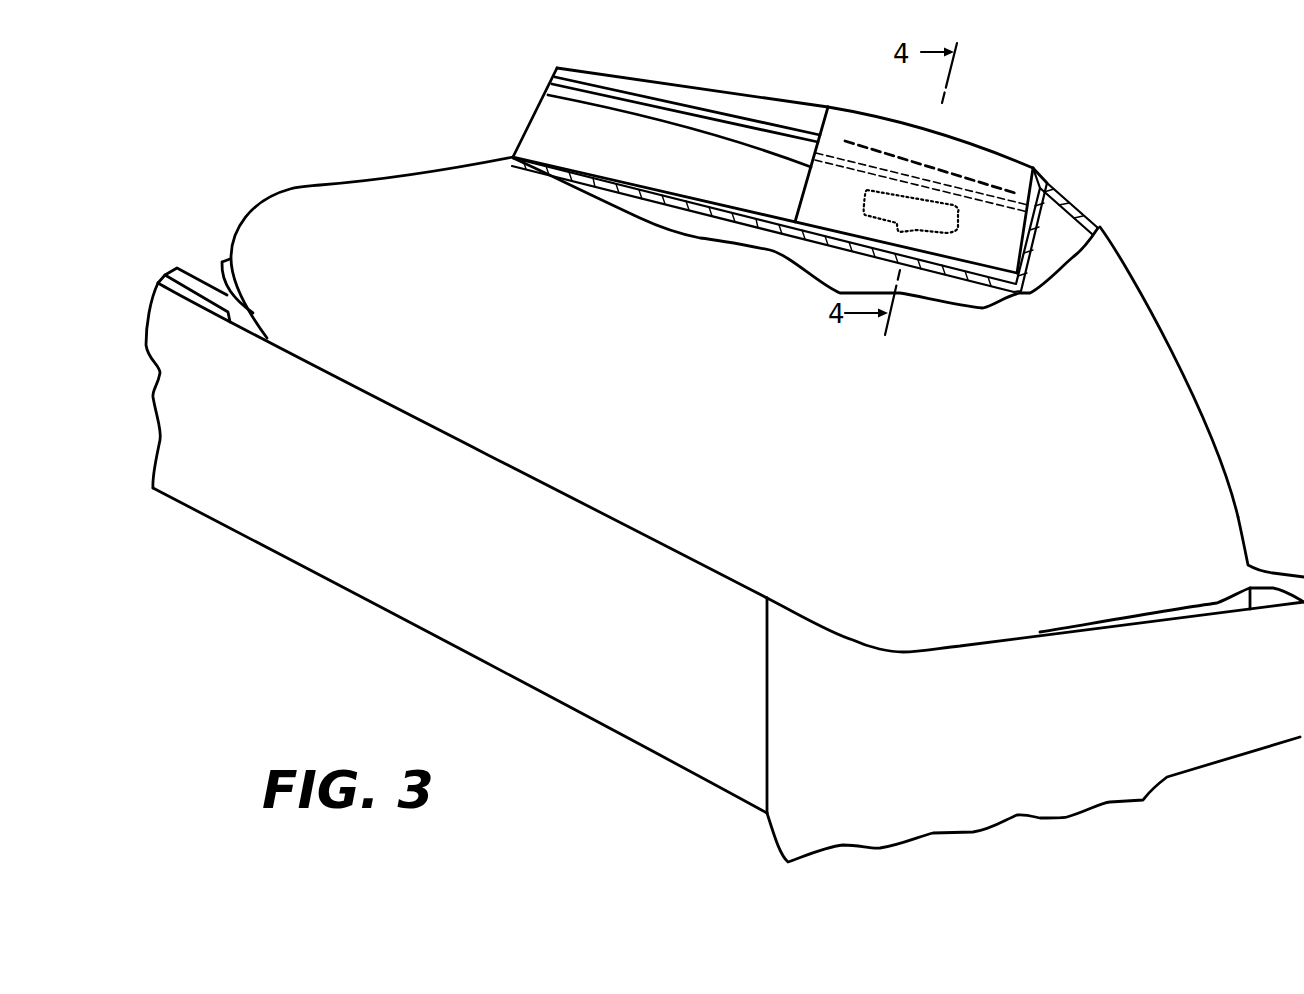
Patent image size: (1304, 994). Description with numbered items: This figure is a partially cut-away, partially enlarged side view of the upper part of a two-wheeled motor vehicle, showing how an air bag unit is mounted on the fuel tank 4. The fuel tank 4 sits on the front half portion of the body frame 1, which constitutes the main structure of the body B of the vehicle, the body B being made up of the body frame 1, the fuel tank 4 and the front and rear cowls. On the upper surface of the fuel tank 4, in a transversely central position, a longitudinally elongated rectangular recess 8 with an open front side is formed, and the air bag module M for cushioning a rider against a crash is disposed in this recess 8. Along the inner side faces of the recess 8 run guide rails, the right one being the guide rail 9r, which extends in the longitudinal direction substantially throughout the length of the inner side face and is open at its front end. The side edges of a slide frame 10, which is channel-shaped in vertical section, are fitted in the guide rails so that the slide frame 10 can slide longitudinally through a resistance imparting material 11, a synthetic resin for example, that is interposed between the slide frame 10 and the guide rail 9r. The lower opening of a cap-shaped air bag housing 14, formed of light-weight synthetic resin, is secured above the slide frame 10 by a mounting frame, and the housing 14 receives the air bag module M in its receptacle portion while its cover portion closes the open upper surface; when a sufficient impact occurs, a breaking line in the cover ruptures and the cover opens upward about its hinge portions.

The body frame 1 is at (377, 607).
The fuel tank 4 is at (946, 463).
The recess 8 is at (557, 167).
The right guide rail 9r is at (792, 153).
The slide frame 10 is at (817, 210).
The resistance imparting material 11 is at (868, 146).
The air bag housing 14 is at (990, 150).
The air bag module M is at (974, 215).
The body B is at (222, 224).